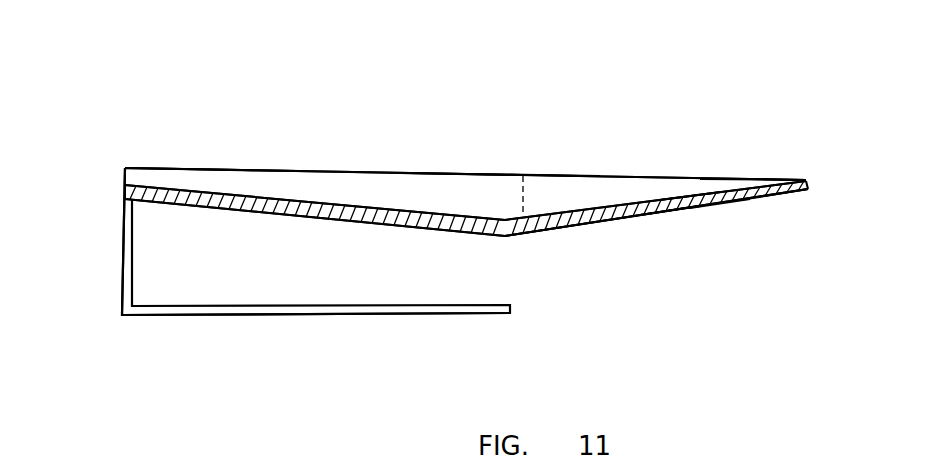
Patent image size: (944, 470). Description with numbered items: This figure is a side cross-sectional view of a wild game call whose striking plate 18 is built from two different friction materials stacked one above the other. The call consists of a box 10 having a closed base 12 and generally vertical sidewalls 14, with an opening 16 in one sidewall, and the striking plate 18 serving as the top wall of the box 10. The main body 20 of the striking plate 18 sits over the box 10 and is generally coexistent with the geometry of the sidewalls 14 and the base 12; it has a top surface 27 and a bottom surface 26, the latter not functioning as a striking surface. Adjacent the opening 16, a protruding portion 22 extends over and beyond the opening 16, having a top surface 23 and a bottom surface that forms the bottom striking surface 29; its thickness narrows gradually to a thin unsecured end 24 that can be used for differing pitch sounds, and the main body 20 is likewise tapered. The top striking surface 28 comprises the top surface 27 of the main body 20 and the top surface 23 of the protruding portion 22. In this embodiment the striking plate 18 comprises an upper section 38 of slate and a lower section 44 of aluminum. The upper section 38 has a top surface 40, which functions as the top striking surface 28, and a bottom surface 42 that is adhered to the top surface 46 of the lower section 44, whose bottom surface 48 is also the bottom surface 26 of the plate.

The box 10 is at (292, 280).
The closed base 12 is at (290, 312).
The sidewalls 14 is at (128, 249).
The opening 16 is at (531, 267).
The striking plate 18 is at (418, 187).
The main body 20 is at (318, 190).
The protruding portion 22 is at (615, 190).
The top surface of the protruding portion 23 is at (759, 171).
The thin unsecured end 24 is at (805, 182).
The bottom surface of the main body 26 is at (451, 234).
The top surface of the main body 27 is at (194, 161).
The top striking surface 28 is at (460, 167).
The bottom striking surface 29 is at (565, 243).
The upper section 38 is at (278, 190).
The top surface of the upper section 40 is at (670, 170).
The bottom surface of the upper section 42 is at (699, 188).
The lower section 44 is at (668, 203).
The top surface of the lower section 46 is at (719, 211).
The bottom surface of the lower section 48 is at (758, 208).